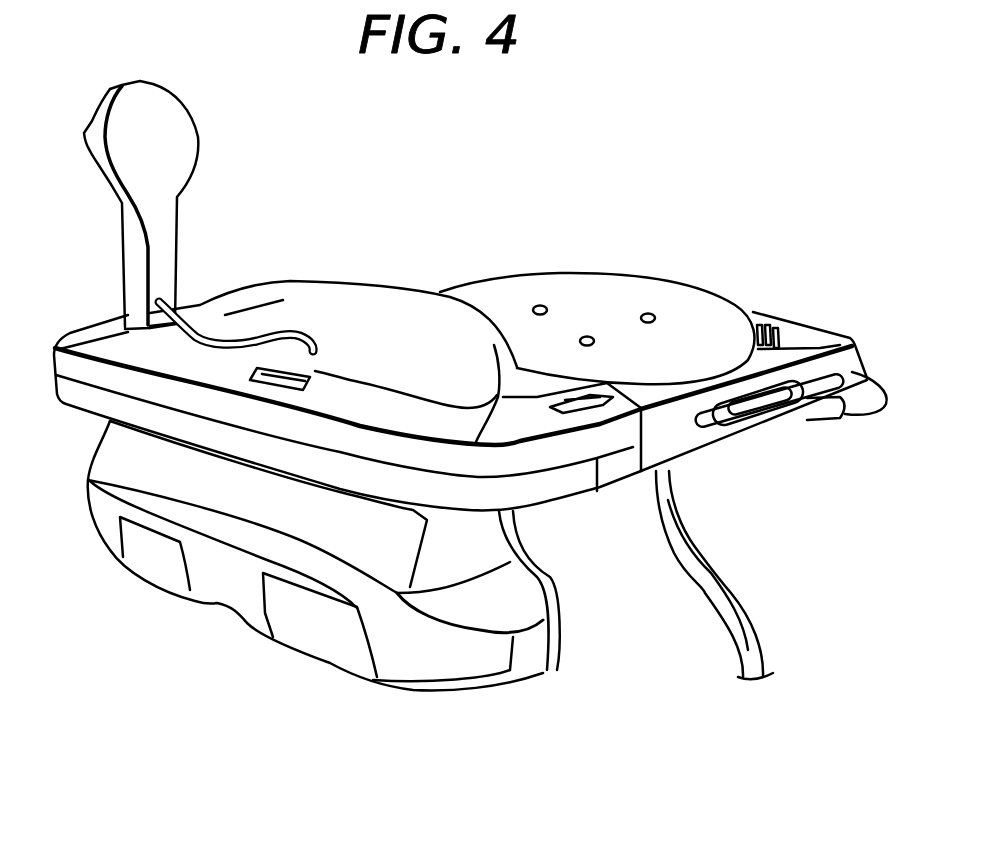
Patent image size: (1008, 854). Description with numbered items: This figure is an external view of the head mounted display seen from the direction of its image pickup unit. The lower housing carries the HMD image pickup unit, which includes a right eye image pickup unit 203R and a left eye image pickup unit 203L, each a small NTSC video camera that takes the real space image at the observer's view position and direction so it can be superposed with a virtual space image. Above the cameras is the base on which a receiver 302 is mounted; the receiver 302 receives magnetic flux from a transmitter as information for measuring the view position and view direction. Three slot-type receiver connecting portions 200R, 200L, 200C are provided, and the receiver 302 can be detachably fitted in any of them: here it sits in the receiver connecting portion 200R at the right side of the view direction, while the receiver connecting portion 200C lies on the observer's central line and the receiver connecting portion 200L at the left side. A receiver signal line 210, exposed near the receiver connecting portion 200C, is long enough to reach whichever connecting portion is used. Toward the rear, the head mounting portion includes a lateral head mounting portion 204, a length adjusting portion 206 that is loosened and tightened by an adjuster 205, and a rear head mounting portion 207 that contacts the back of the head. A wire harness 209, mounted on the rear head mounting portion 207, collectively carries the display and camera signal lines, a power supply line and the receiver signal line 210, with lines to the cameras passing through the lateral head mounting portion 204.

The receiver 302 is at (176, 123).
The receiver connecting portion 200R is at (128, 314).
The receiver signal line 210 is at (225, 337).
The receiver connecting portion 200C is at (280, 377).
The receiver connecting portion 200L is at (580, 405).
The rear head mounting portion 207 is at (720, 307).
The length adjusting portion 206 is at (797, 332).
The adjuster 205 is at (767, 402).
The lateral head mounting portion 204 is at (687, 440).
The wire harness 209 is at (712, 602).
The right eye image pickup unit 203R is at (155, 560).
The left eye image pickup unit 203L is at (313, 633).